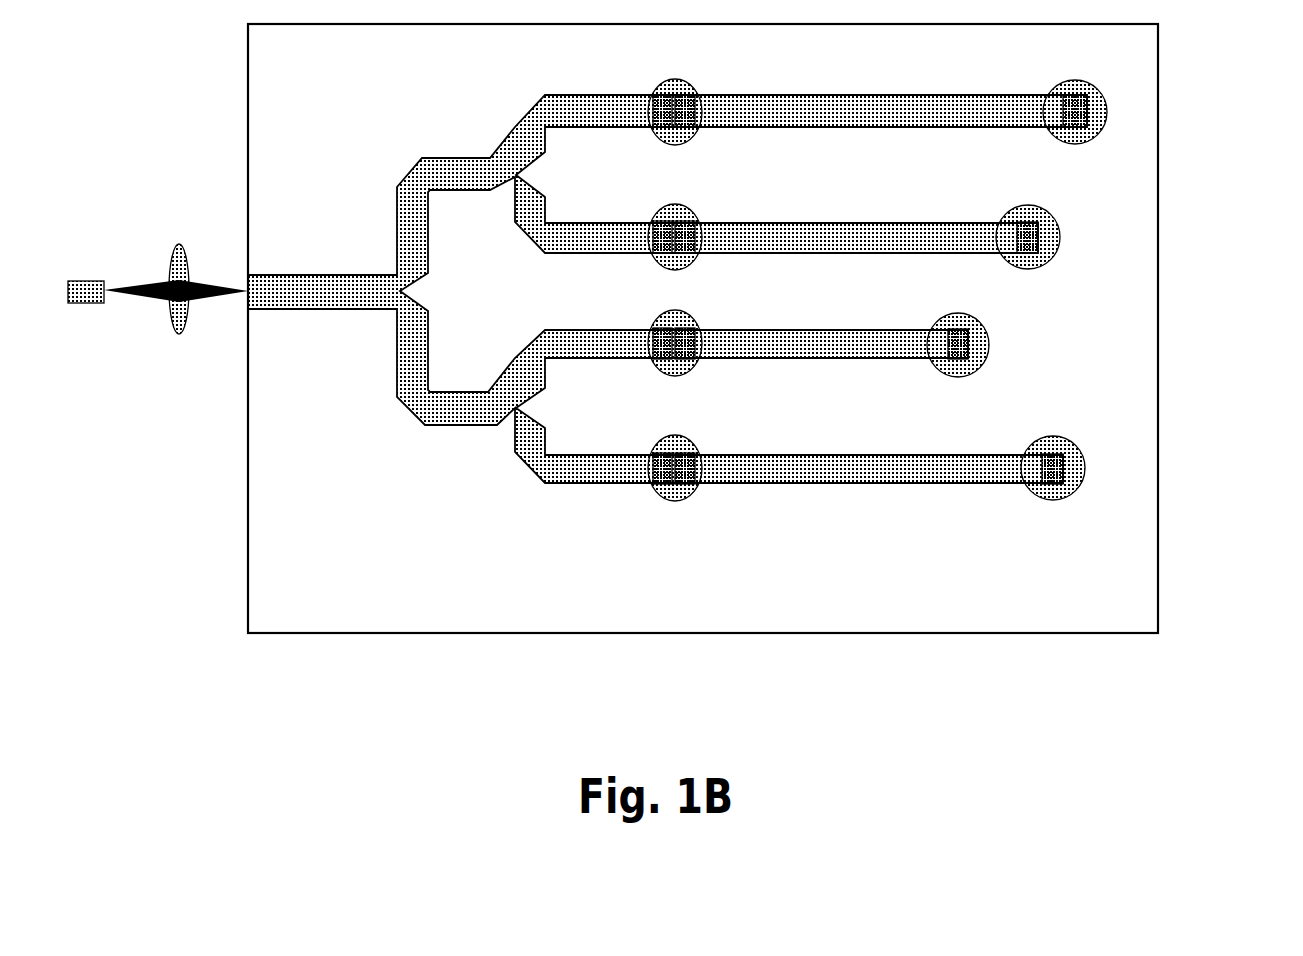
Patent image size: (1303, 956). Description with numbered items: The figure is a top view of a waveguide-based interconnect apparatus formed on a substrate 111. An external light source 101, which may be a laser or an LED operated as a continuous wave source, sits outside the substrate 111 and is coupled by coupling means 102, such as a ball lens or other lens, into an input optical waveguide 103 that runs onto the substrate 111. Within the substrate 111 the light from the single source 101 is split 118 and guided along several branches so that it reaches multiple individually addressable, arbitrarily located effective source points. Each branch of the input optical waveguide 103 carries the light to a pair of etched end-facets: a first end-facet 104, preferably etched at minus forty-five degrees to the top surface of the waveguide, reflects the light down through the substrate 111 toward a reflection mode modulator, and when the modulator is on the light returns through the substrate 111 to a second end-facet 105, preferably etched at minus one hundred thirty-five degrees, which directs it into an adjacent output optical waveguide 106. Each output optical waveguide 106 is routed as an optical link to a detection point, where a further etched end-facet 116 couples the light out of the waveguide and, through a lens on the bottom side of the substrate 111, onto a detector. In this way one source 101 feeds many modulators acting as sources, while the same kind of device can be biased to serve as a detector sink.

The external light source 101 is at (81, 264).
The coupling means 102 is at (179, 242).
The input optical waveguide 103 is at (291, 274).
The first end-facet 104 is at (681, 452).
The second end-facet 105 is at (870, 259).
The output optical waveguide 106 is at (945, 134).
The substrate 111 is at (245, 473).
The etched end-facet 116 is at (1088, 120).
The split 118 is at (494, 199).